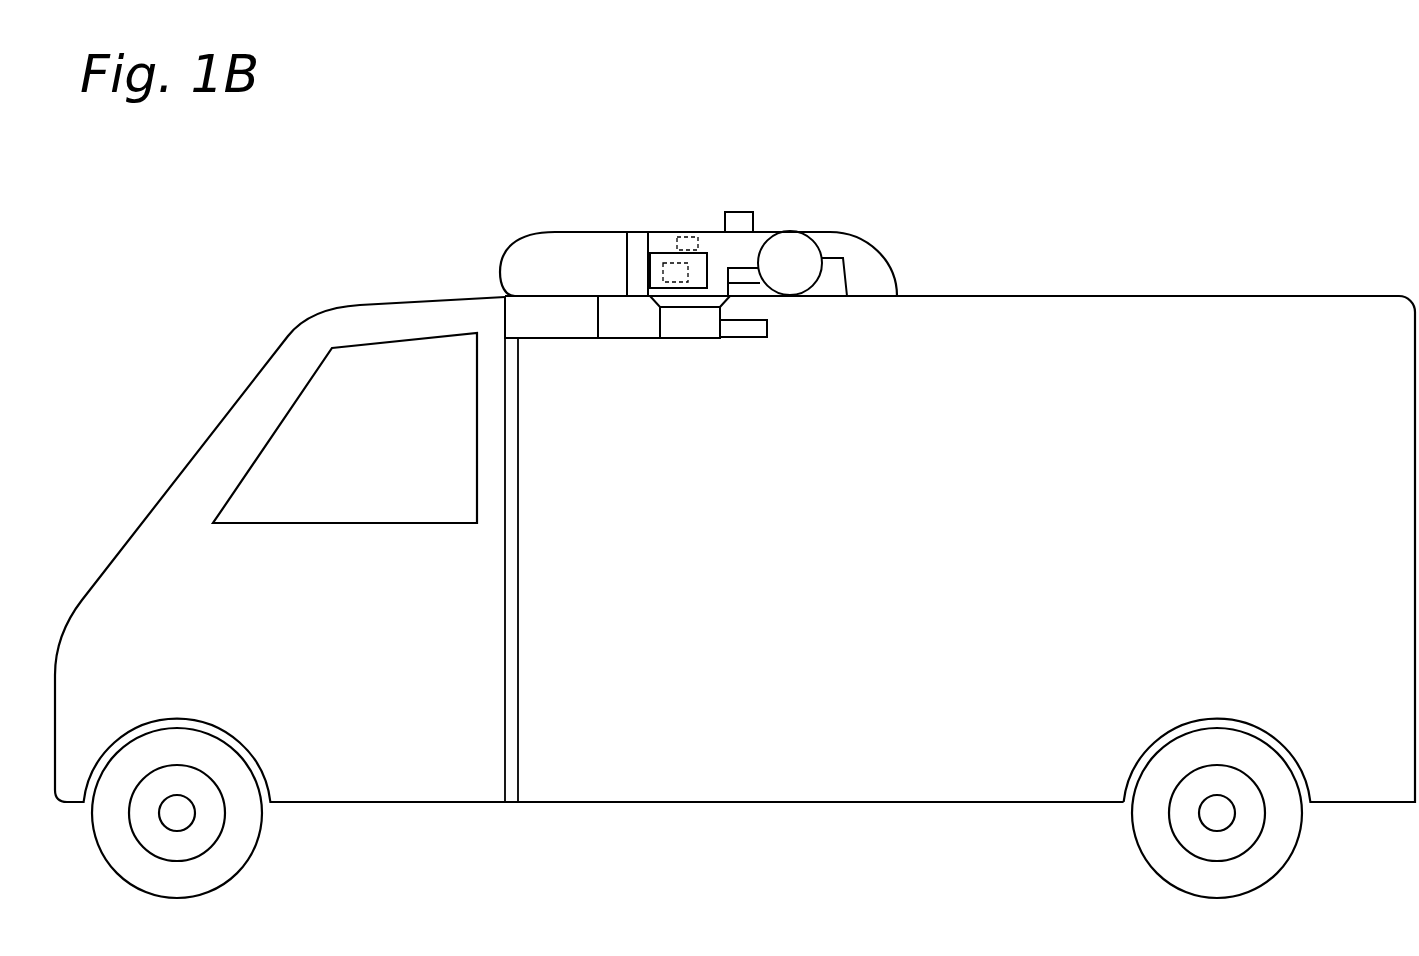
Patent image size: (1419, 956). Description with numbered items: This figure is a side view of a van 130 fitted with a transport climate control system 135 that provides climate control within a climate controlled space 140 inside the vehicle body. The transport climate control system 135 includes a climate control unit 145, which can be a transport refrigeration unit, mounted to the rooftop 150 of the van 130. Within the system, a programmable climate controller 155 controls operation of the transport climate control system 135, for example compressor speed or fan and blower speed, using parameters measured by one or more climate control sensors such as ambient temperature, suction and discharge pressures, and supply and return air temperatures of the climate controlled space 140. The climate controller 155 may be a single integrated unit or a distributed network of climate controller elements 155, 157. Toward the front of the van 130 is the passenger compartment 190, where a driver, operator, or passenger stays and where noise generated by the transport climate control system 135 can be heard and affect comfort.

The van 130 is at (257, 295).
The transport climate control system 135 is at (835, 192).
The climate controlled space 140 is at (1272, 335).
The climate control unit 145 is at (868, 242).
The rooftop 150 is at (1132, 297).
The climate controller 155 is at (693, 235).
The climate controller element 157 is at (670, 260).
The passenger compartment 190 is at (300, 462).